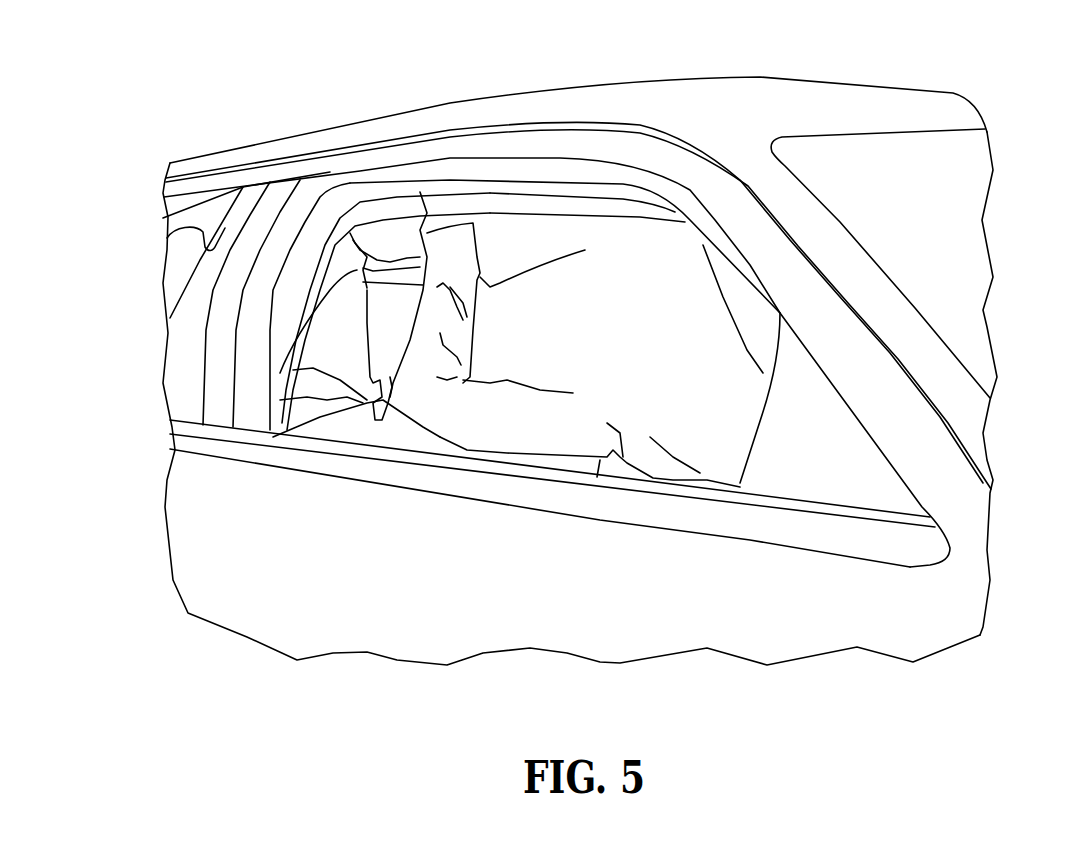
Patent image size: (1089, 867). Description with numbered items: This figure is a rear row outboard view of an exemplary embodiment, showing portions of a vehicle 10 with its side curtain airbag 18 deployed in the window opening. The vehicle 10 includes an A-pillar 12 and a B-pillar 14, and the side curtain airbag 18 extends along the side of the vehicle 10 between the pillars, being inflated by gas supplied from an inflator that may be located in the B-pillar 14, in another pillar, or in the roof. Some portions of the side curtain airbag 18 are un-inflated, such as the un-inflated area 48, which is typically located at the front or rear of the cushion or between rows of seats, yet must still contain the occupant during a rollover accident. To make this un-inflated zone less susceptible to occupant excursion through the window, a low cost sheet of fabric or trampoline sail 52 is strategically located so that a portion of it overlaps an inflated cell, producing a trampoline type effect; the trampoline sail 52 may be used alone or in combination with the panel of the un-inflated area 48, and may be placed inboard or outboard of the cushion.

The vehicle 10 is at (545, 80).
The A-pillar 12 is at (800, 265).
The B-pillar 14 is at (270, 230).
The side curtain airbag 18 is at (532, 441).
The un-inflated area 48 is at (397, 310).
The trampoline sail 52 is at (697, 413).